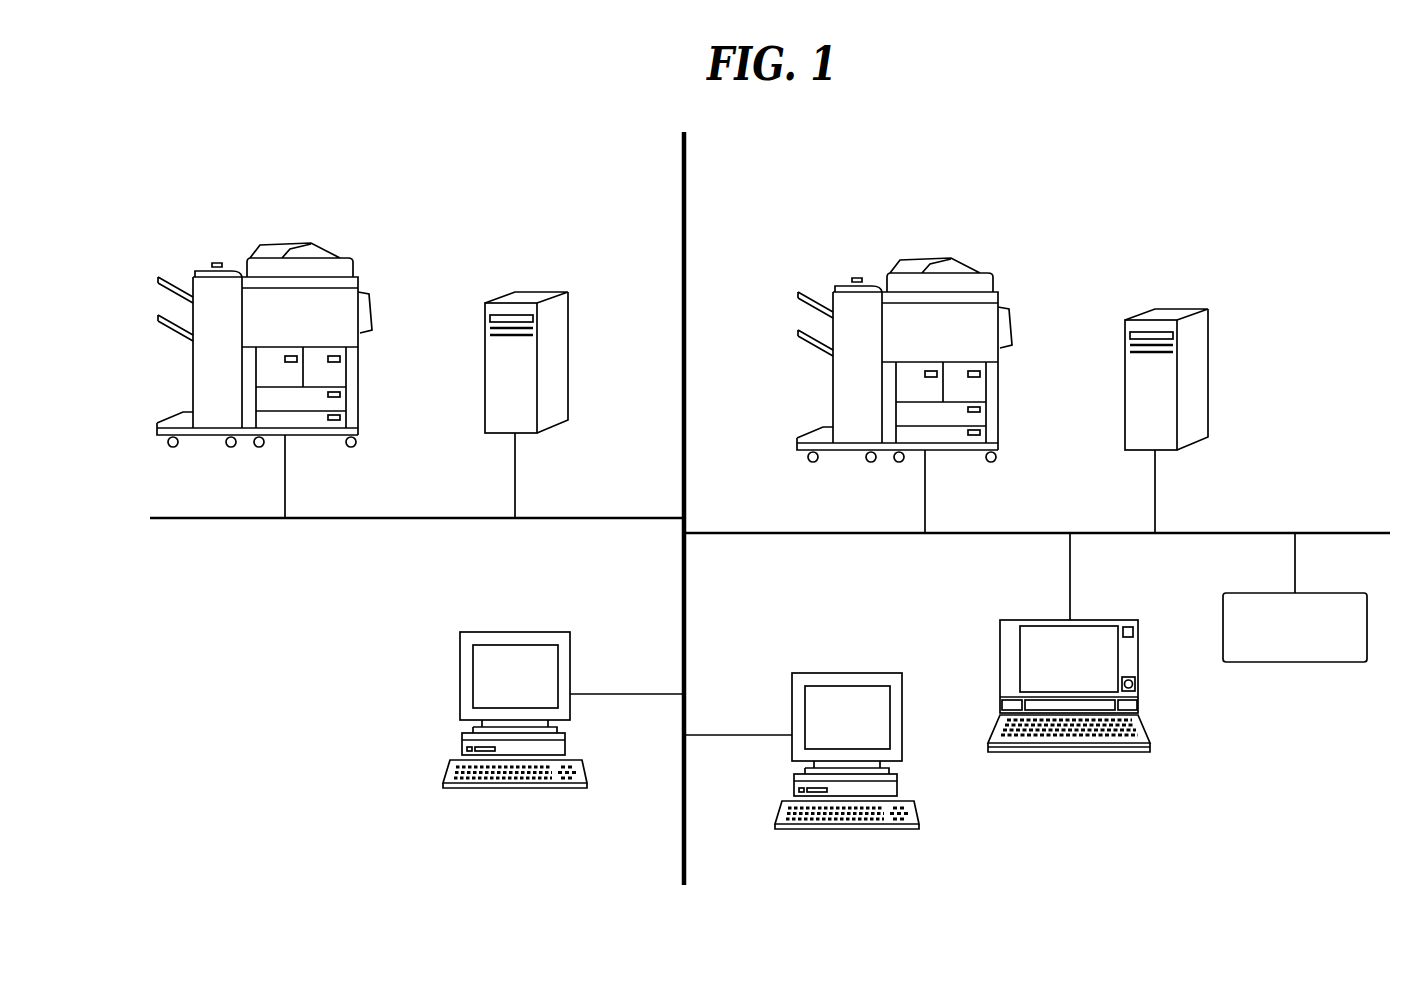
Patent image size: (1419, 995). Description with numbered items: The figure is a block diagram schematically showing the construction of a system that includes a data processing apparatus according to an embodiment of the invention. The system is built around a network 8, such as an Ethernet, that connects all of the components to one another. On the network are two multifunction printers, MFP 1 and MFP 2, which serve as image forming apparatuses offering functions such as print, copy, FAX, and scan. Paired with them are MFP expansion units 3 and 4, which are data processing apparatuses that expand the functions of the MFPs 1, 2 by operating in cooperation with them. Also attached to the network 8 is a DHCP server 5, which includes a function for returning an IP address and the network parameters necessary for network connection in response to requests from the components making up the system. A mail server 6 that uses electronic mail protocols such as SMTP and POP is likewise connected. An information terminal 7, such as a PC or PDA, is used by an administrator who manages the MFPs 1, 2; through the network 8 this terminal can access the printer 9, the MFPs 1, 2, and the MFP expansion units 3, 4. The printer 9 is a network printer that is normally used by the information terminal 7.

The multifunction printer (MFP) 1 is at (328, 256).
The multifunction printer (MFP) 2 is at (973, 275).
The MFP expansion unit 3 is at (568, 322).
The MFP expansion unit 4 is at (1208, 338).
The DHCP server 5 is at (518, 632).
The mail server 6 is at (845, 673).
The information terminal 7 is at (1138, 655).
The network 8 is at (687, 180).
The printer 9 is at (1307, 662).